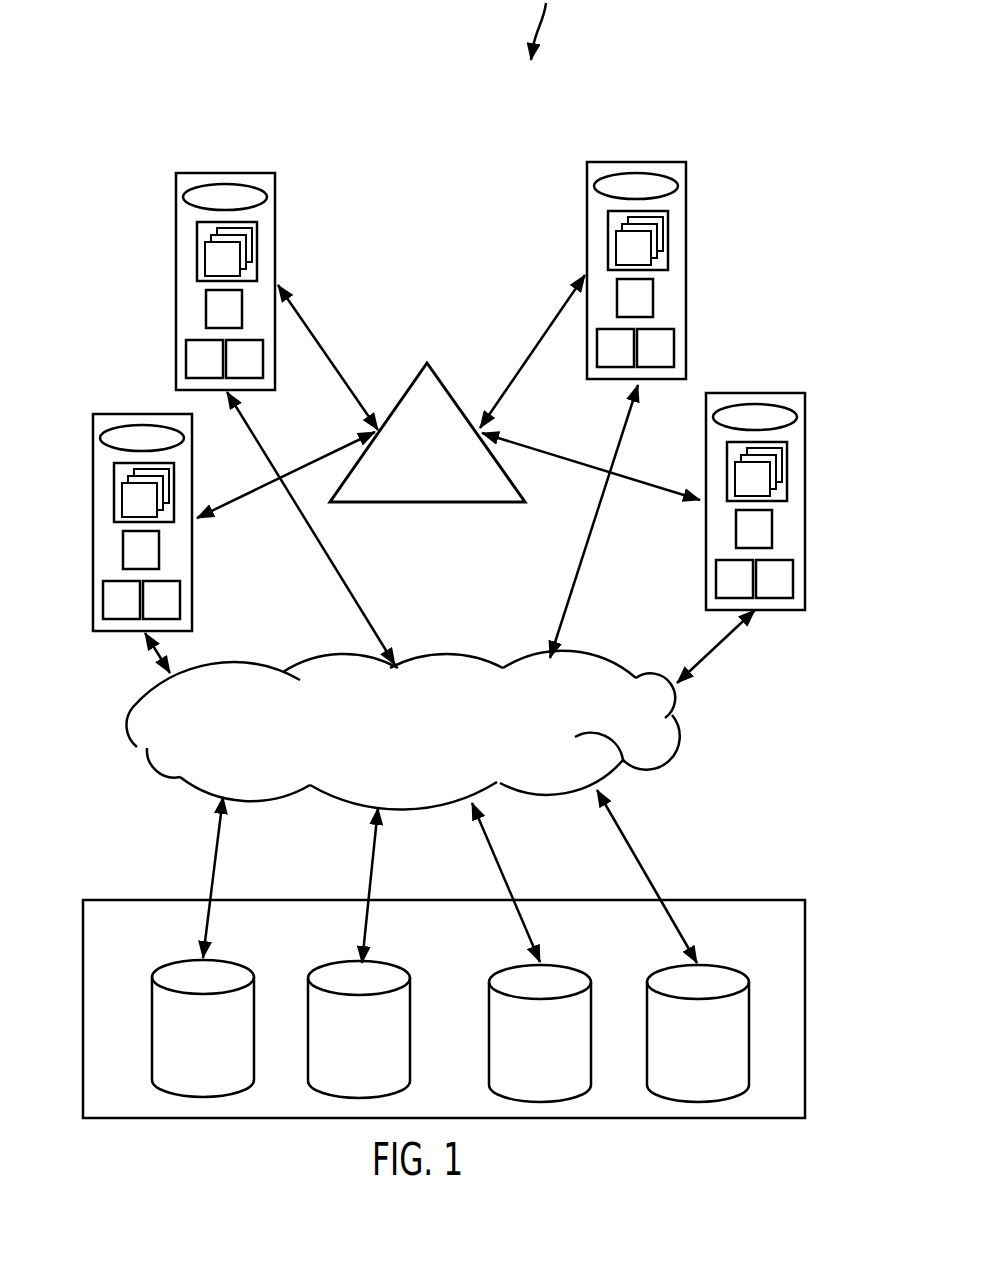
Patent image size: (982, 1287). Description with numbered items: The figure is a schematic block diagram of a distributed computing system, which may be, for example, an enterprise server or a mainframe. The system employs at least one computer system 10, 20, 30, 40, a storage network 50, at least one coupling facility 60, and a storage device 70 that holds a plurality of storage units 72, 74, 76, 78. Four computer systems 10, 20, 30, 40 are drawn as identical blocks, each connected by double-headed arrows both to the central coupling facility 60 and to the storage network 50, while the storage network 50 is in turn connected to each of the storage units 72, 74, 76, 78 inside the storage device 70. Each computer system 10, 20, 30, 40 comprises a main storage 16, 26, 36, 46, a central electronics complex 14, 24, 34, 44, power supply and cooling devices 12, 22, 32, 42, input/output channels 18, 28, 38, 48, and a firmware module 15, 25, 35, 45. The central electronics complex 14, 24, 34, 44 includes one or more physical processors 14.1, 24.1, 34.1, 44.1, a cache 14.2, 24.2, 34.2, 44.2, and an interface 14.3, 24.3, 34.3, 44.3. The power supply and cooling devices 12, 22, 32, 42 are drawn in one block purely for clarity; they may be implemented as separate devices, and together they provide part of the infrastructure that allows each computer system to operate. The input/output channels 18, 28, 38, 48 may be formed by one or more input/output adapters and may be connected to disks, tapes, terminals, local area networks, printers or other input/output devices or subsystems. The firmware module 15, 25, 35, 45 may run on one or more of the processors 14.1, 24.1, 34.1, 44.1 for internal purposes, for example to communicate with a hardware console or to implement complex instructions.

The computer system 10 is at (105, 421).
The power supply and cooling devices 12 is at (132, 611).
The central electronics complex 14 is at (115, 510).
The physical processor 14.1 is at (127, 497).
The cache 14.2 is at (132, 480).
The interface 14.3 is at (165, 476).
The firmware module 15 is at (138, 432).
The main storage 16 is at (151, 561).
The input/output channels 18 is at (172, 611).
The computer system 20 is at (188, 180).
The power supply and cooling devices 22 is at (214, 370).
The central electronics complex 24 is at (198, 269).
The physical processor 24.1 is at (210, 256).
The cache 24.2 is at (215, 239).
The interface 24.3 is at (248, 235).
The firmware module 25 is at (221, 191).
The main storage 26 is at (234, 320).
The input/output channels 28 is at (254, 370).
The computer system 30 is at (599, 169).
The power supply and cooling devices 32 is at (625, 359).
The central electronics complex 34 is at (609, 258).
The physical processor 34.1 is at (621, 245).
The cache 34.2 is at (626, 228).
The interface 34.3 is at (659, 224).
The firmware module 35 is at (632, 180).
The main storage 36 is at (645, 309).
The input/output channels 38 is at (665, 359).
The computer system 40 is at (718, 400).
The power supply and cooling devices 42 is at (744, 590).
The central electronics complex 44 is at (728, 489).
The physical processor 44.1 is at (740, 476).
The cache 44.2 is at (745, 459).
The interface 44.3 is at (778, 455).
The firmware module 45 is at (751, 411).
The main storage 46 is at (764, 540).
The input/output channels 48 is at (784, 590).
The storage network 50 is at (462, 666).
The coupling facility 60 is at (427, 361).
The storage device 70 is at (105, 907).
The storage unit 72 is at (175, 975).
The storage unit 74 is at (338, 975).
The storage unit 76 is at (508, 978).
The storage unit 78 is at (662, 980).